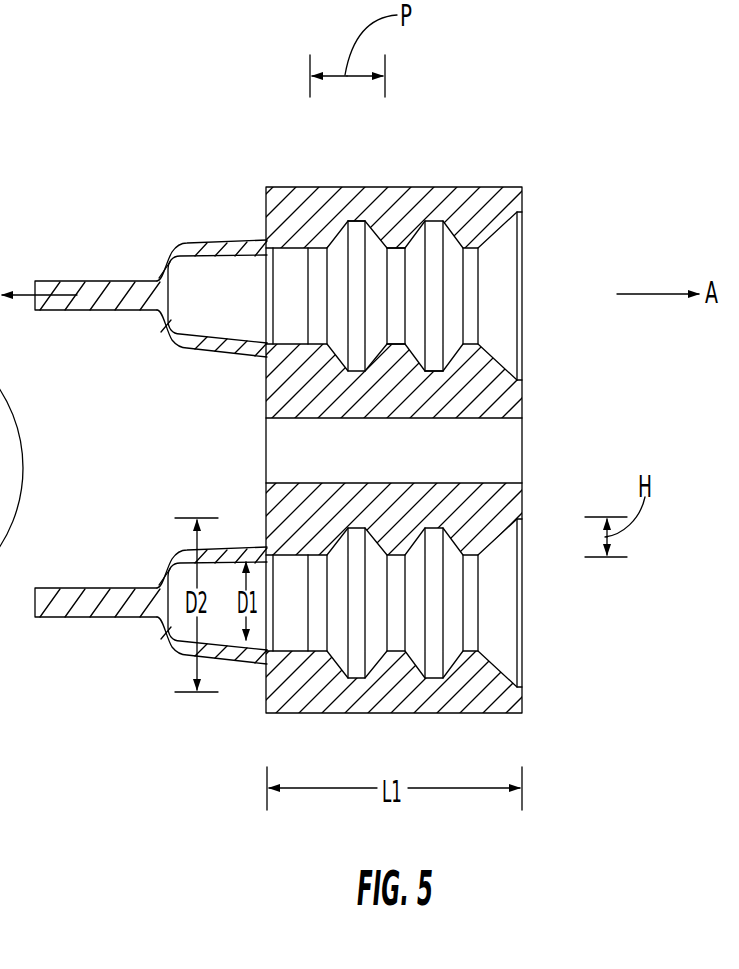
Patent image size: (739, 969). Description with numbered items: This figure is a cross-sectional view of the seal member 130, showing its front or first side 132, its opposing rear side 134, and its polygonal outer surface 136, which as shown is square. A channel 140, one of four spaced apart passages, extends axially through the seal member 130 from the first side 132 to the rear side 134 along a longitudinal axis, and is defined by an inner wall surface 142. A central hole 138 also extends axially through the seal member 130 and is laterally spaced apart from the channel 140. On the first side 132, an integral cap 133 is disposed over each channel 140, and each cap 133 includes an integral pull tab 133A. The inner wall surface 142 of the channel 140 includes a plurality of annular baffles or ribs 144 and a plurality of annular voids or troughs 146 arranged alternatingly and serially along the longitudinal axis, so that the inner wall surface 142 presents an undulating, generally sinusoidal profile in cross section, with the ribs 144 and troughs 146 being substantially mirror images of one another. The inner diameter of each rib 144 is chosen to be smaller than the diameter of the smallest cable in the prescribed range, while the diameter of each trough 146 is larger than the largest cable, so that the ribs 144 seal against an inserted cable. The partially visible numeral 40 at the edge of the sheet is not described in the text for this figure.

The seal member 130 is at (465, 149).
The first side 132 is at (262, 708).
The integral cap 133 is at (187, 253).
The integral pull tab 133A is at (40, 292).
The rear side 134 is at (522, 703).
The outer surface 136 is at (480, 187).
The central hole 138 is at (430, 452).
The channel 140 is at (523, 237).
The inner wall surface 142 is at (289, 255).
The annular rib 144 is at (397, 230).
The annular trough 146 is at (348, 224).
The adjacent component 40 is at (11, 483).